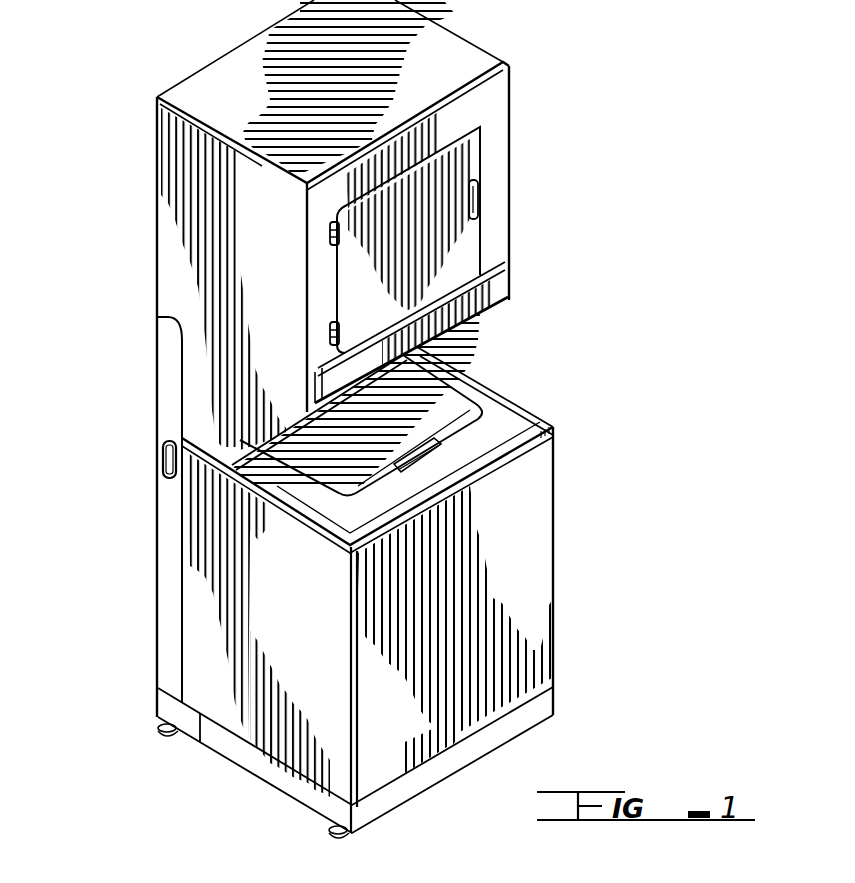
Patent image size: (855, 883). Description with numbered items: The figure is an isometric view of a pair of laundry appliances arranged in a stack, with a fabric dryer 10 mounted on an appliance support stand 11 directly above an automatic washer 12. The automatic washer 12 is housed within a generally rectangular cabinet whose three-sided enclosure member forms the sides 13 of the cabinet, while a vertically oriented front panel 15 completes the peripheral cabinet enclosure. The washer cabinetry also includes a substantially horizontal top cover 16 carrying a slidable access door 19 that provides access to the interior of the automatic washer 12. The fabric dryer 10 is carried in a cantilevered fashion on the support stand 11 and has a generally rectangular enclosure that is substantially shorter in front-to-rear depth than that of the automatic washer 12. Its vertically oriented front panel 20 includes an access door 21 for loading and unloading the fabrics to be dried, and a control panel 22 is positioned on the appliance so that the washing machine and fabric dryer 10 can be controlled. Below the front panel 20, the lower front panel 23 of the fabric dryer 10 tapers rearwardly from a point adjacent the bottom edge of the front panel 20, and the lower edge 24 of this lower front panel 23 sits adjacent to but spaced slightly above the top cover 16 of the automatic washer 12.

The fabric dryer 10 is at (150, 245).
The appliance support stand 11 is at (153, 572).
The automatic washer 12 is at (577, 510).
The sides 13 is at (310, 594).
The front panel 15 is at (402, 750).
The top cover 16 is at (537, 425).
The slidable access door 19 is at (463, 415).
The fabric dryer front panel 20 is at (500, 107).
The access door 21 is at (470, 163).
The control panel 22 is at (506, 284).
The lower front panel 23 is at (440, 341).
The lower edge 24 is at (222, 468).